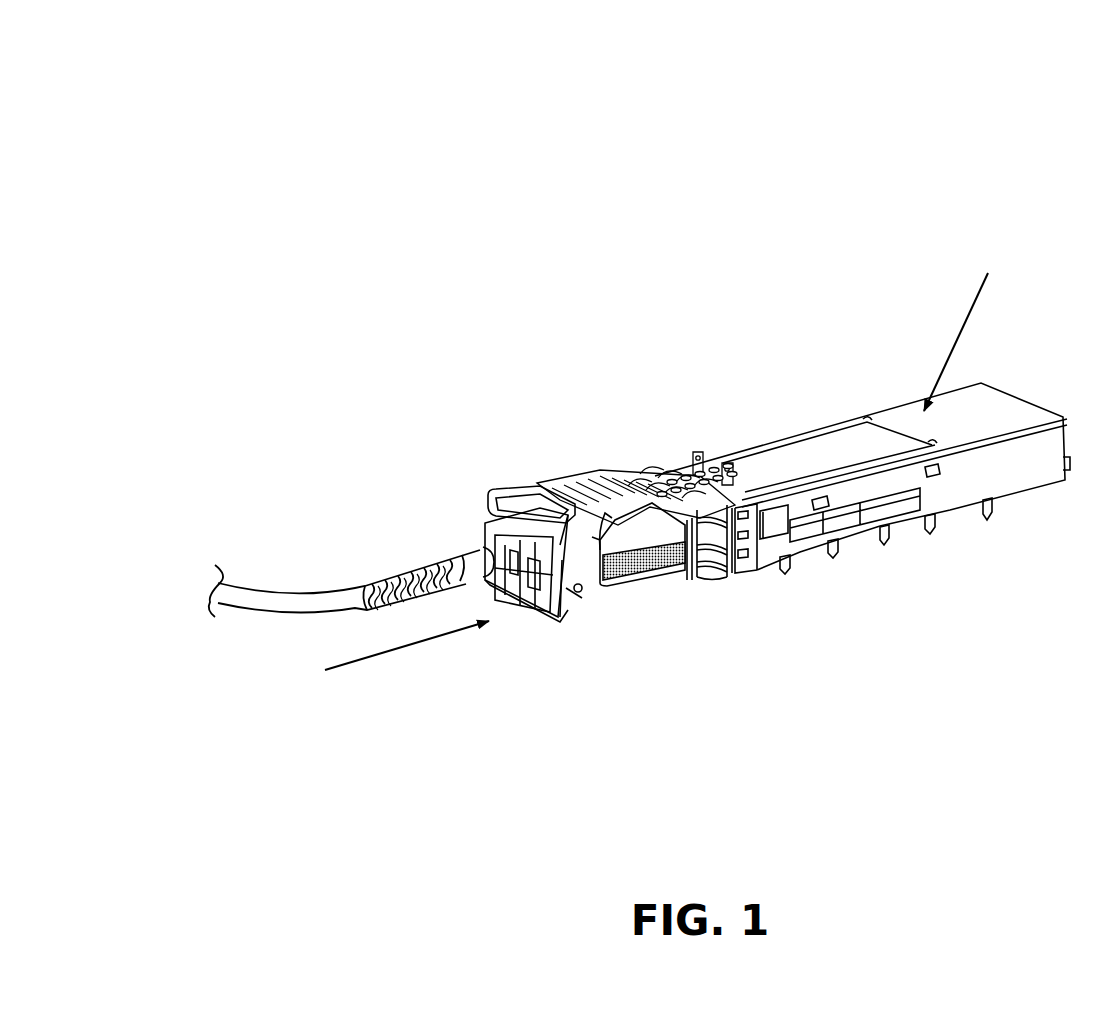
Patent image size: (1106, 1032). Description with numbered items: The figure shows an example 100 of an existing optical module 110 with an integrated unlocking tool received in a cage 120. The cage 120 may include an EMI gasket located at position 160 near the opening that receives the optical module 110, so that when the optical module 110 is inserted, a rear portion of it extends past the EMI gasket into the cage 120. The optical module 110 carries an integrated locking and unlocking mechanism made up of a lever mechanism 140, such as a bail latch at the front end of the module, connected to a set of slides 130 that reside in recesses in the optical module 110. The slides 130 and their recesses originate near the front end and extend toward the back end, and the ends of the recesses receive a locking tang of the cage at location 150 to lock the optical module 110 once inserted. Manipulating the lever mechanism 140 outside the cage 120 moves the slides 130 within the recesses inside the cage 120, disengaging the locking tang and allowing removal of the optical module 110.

The example 100 is at (207, 42).
The optical module 110 is at (474, 537).
The cage 120 is at (745, 428).
The set of slides 130 is at (639, 580).
The lever mechanism 140 is at (572, 598).
The location of locking tang 150 is at (773, 540).
The EMI gasket position 160 is at (680, 578).